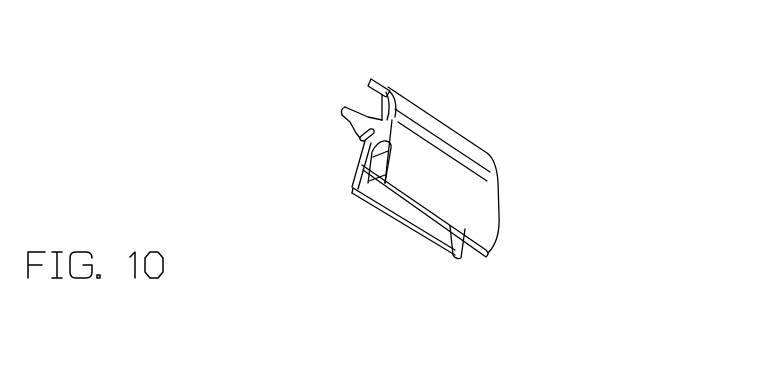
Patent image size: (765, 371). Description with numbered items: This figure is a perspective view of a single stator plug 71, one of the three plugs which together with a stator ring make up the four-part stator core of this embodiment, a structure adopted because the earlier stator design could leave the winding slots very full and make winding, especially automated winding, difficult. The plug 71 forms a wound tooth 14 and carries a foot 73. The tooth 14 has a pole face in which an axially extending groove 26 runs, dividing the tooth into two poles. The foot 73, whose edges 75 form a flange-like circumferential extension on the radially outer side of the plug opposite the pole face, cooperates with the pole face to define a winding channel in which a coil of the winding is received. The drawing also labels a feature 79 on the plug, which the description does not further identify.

The stator plug 71 is at (470, 72).
The foot 73 is at (467, 200).
The edges 75 is at (452, 260).
The wound tooth 14 is at (383, 86).
The axially extending groove 26 is at (359, 137).
The slotted flange 79 is at (362, 176).